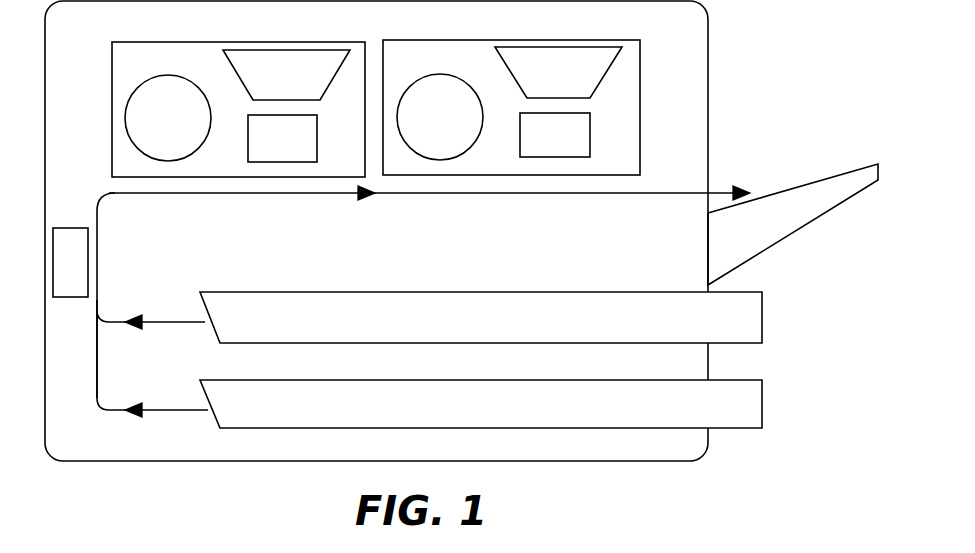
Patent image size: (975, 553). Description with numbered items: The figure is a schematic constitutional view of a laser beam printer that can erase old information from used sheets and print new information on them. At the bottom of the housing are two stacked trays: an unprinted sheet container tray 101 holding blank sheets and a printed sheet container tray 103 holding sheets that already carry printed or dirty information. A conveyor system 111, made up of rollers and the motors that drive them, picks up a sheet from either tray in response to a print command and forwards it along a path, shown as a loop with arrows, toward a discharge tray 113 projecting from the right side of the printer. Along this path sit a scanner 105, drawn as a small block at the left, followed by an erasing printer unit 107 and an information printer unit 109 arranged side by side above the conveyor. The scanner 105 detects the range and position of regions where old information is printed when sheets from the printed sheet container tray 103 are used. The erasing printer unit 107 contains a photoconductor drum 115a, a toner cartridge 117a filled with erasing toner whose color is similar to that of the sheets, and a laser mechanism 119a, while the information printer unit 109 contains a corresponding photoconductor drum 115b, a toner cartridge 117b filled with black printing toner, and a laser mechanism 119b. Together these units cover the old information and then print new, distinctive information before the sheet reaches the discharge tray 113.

The unprinted sheet container tray 101 is at (500, 331).
The printed sheet container tray 103 is at (500, 414).
The scanner 105 is at (72, 228).
The erasing printer unit 107 is at (112, 82).
The information printer unit 109 is at (640, 92).
The conveyor system 111 is at (98, 360).
The discharge tray 113 is at (826, 211).
The photoconductor drum 115a is at (143, 131).
The photoconductor drum 115b is at (415, 129).
The toner cartridge 117a is at (262, 89).
The toner cartridge 117b is at (533, 86).
The laser mechanism 119a is at (307, 151).
The laser mechanism 119b is at (532, 147).